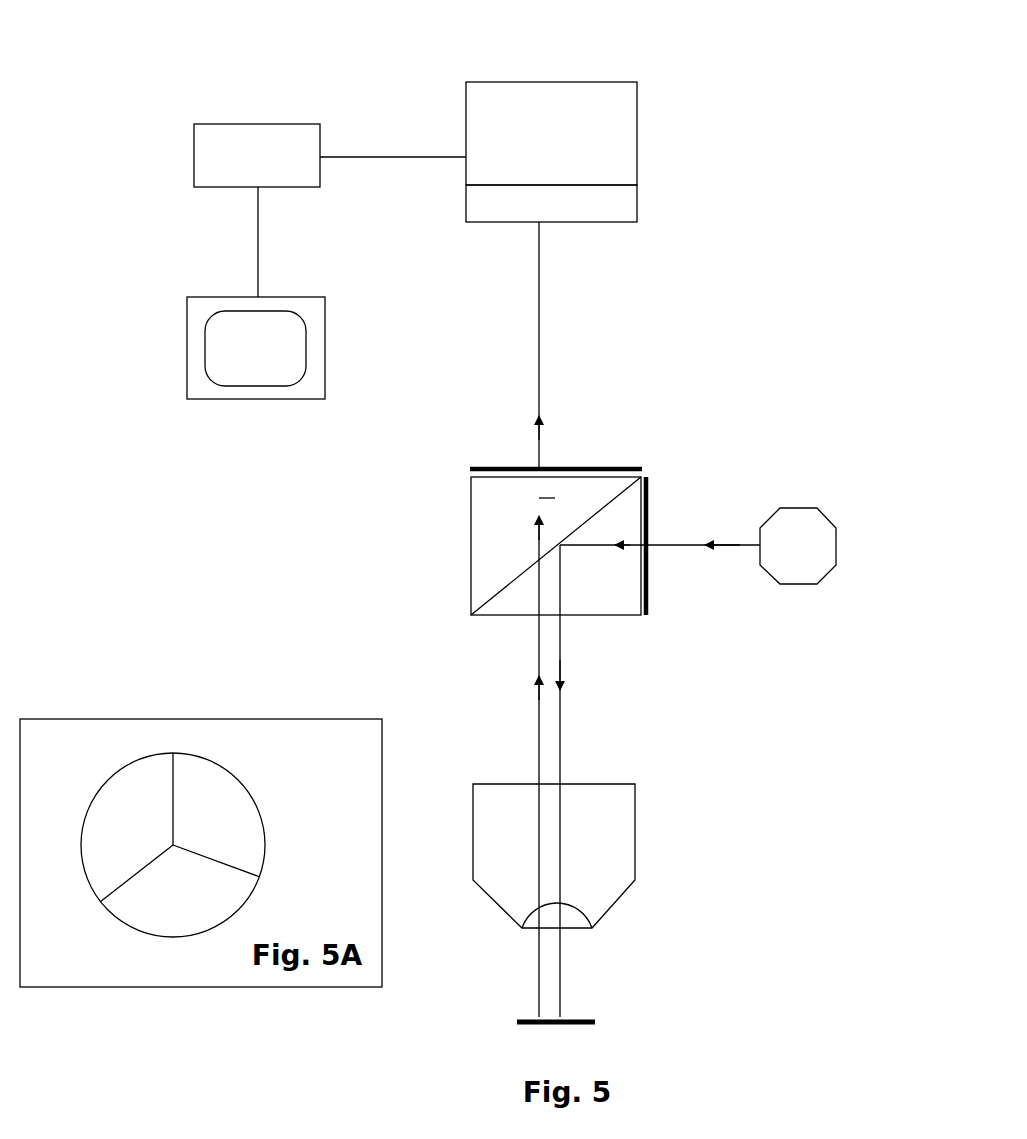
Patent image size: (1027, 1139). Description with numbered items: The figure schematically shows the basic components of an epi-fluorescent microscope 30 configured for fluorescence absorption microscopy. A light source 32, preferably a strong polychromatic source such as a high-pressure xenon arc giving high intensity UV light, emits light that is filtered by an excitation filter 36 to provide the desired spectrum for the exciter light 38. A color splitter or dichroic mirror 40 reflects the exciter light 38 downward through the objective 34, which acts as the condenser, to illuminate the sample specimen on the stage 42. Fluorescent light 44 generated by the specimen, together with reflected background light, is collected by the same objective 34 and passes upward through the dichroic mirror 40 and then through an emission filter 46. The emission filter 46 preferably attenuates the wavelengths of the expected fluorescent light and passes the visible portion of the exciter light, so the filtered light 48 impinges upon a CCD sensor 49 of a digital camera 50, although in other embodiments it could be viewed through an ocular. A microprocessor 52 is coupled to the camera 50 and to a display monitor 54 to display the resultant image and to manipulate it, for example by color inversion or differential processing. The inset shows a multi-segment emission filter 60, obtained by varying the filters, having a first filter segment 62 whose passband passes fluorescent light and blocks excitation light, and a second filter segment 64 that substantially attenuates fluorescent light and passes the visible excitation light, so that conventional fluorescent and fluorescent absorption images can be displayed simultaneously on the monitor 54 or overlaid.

In FIG. 5, the microscope 30 is at (802, 82).
In FIG. 5, the light source 32 is at (822, 510).
In FIG. 5, the objective 34 is at (636, 841).
In FIG. 5, the excitation filter 36 is at (649, 500).
In FIG. 5, the exciter light 38 is at (590, 548).
In FIG. 5, the dichroic mirror 40 is at (510, 583).
In FIG. 5, the stage 42 is at (590, 1018).
In FIG. 5, the fluorescent light 44 is at (537, 659).
In FIG. 5, the emission filter 46 is at (497, 467).
In FIG. 5, the filtered light 48 is at (537, 363).
In FIG. 5, the CCD sensor 49 is at (637, 200).
In FIG. 5, the digital camera 50 is at (637, 120).
In FIG. 5, the microprocessor 52 is at (262, 124).
In FIG. 5, the display monitor 54 is at (282, 297).
In FIG. 5A, the emission filter 60 is at (243, 769).
In FIG. 5A, the first filter segment 62 is at (136, 827).
In FIG. 5A, the second filter segment 64 is at (216, 841).